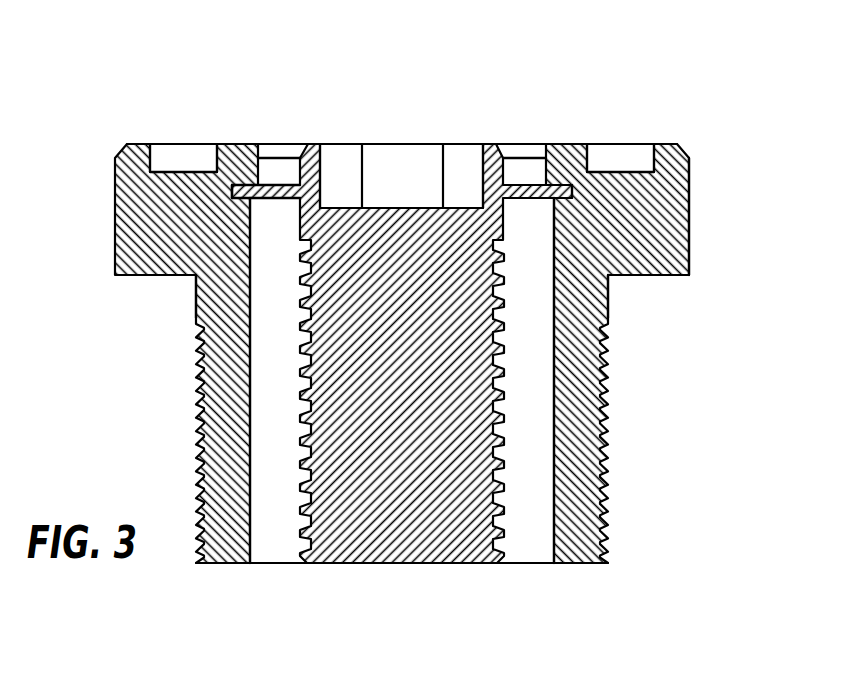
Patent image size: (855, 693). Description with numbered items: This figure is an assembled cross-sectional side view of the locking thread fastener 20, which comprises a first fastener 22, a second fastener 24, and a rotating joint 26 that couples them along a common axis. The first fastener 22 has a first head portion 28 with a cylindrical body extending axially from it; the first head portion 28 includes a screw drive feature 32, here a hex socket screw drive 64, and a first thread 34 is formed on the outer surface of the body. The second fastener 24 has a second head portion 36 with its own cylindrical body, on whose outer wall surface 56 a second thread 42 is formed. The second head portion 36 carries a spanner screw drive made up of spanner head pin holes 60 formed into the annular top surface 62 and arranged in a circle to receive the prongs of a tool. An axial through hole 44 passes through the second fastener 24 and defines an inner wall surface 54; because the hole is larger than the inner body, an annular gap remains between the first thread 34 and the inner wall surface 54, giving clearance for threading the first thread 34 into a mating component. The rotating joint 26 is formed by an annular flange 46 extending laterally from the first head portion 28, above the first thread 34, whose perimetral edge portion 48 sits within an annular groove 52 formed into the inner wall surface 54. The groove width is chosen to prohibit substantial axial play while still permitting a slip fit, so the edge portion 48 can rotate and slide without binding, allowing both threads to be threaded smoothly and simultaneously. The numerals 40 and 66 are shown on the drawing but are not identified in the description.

The locking thread fastener 20 is at (498, 108).
The first fastener 22 is at (420, 563).
The second fastener 24 is at (690, 197).
The rotating joint 26 is at (533, 222).
The first head portion 28 is at (300, 161).
The screw drive feature 32 is at (420, 165).
The first thread 34 is at (303, 538).
The second head portion 36 is at (712, 169).
The slot 40 is at (188, 116).
The second thread 42 is at (196, 468).
The axial through hole 44 is at (266, 592).
The annular flange 46 is at (528, 183).
The perimetral edge portion 48 is at (232, 188).
The annular groove 52 is at (234, 198).
The inner wall surface 54 is at (250, 510).
The outer wall surface 56 is at (196, 300).
The spanner head pin holes 60 is at (636, 170).
The annular top surface 62 is at (134, 144).
The hex socket screw drive 64 is at (383, 165).
The flange side 66 is at (690, 225).